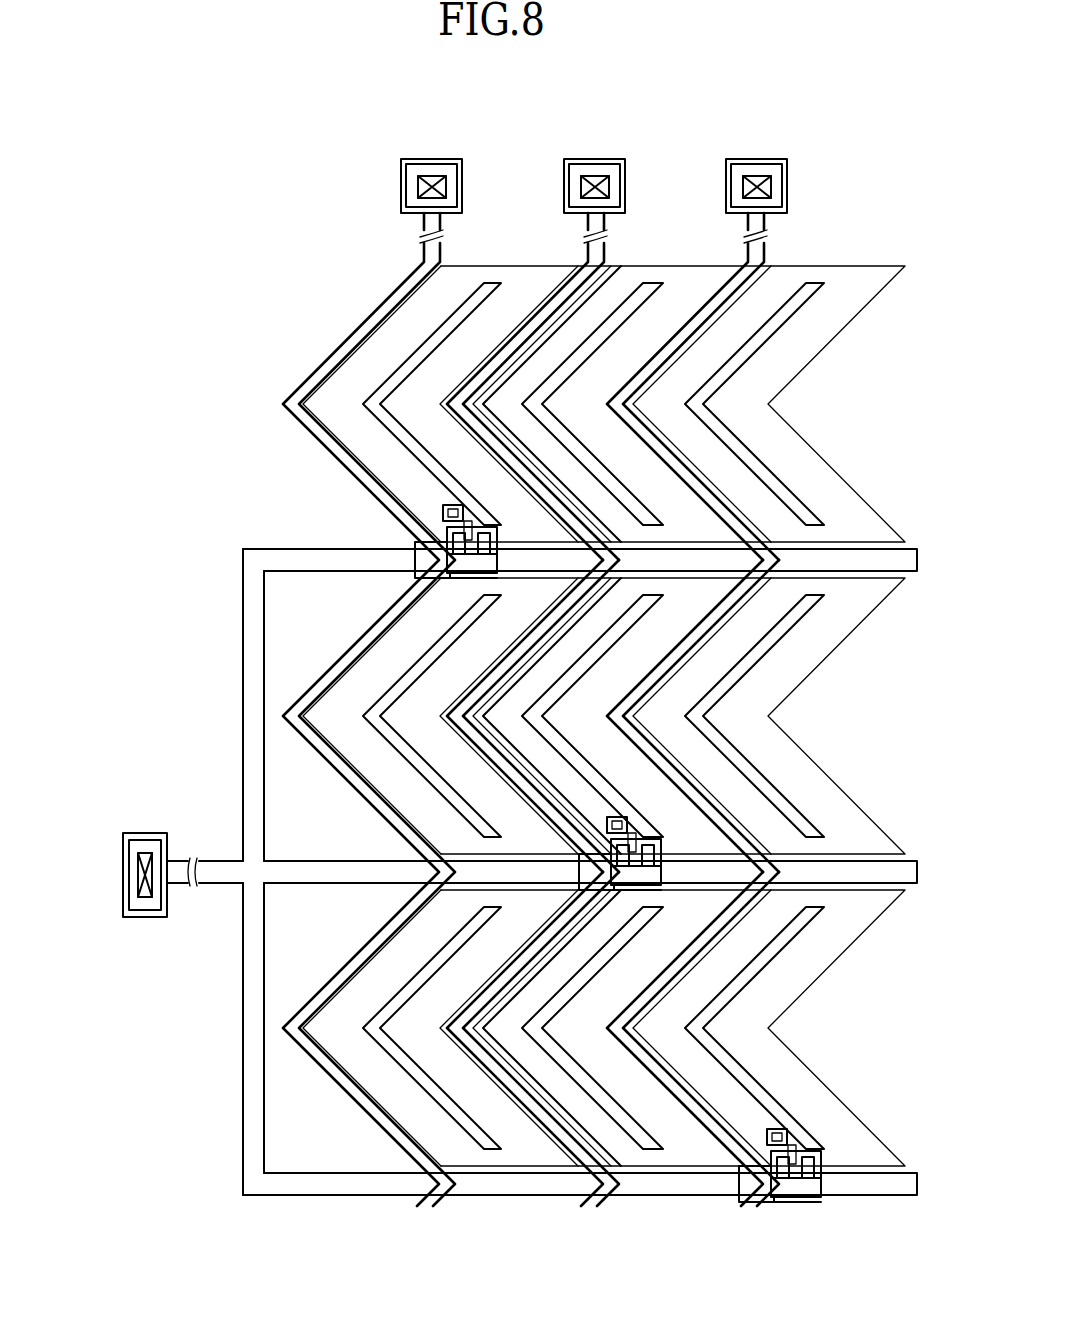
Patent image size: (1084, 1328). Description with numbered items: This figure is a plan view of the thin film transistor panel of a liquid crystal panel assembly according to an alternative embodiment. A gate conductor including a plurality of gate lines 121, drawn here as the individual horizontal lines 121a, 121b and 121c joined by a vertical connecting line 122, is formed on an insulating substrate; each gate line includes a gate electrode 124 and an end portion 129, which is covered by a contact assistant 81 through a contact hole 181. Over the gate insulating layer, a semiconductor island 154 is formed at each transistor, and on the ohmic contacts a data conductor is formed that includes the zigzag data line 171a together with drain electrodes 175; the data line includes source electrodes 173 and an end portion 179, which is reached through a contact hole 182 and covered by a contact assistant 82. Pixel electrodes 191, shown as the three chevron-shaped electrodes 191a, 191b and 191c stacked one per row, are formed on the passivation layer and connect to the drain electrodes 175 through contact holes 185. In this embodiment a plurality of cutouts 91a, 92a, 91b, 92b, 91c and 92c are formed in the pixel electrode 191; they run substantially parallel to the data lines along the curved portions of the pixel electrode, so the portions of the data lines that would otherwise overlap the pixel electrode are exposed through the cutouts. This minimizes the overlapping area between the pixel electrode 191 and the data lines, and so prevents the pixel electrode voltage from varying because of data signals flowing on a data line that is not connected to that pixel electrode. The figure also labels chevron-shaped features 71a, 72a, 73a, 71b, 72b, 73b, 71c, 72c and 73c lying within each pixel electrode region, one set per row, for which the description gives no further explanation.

The contact assistant 82 is at (566, 167).
The end portion 179 is at (402, 167).
The contact hole 182 is at (420, 190).
The data line 171a is at (378, 300).
The cutout 91a is at (537, 297).
The cutout 91b is at (498, 750).
The cutout 91c is at (542, 1137).
The cutout 92a is at (700, 297).
The cutout 92b is at (658, 750).
The cutout 92c is at (705, 1137).
The first storage electrode 71a is at (420, 372).
The first storage electrode 71b is at (420, 684).
The first storage electrode 71c is at (420, 996).
The second storage electrode 72a is at (572, 372).
The second storage electrode 72b is at (572, 684).
The second storage electrode 72c is at (572, 996).
The third storage electrode 73a is at (740, 372).
The third storage electrode 73b is at (742, 684).
The third storage electrode 73c is at (742, 996).
The pixel electrode 191 is at (500, 716).
The pixel electrode 191a is at (830, 346).
The pixel electrode 191b is at (842, 648).
The pixel electrode 191c is at (842, 966).
The gate line 121 is at (506, 809).
The gate line 121a is at (300, 549).
The gate line 121b is at (310, 884).
The gate line 121c is at (312, 1173).
The gate connecting line 122 is at (268, 803).
The contact assistant 81 is at (160, 852).
The contact hole 181 is at (124, 862).
The end portion 129 is at (124, 896).
The contact hole 185 is at (443, 512).
The semiconductor island 154 is at (492, 532).
The drain electrode 175 is at (484, 513).
The source electrode 173 is at (485, 576).
The gate electrode 124 is at (420, 548).